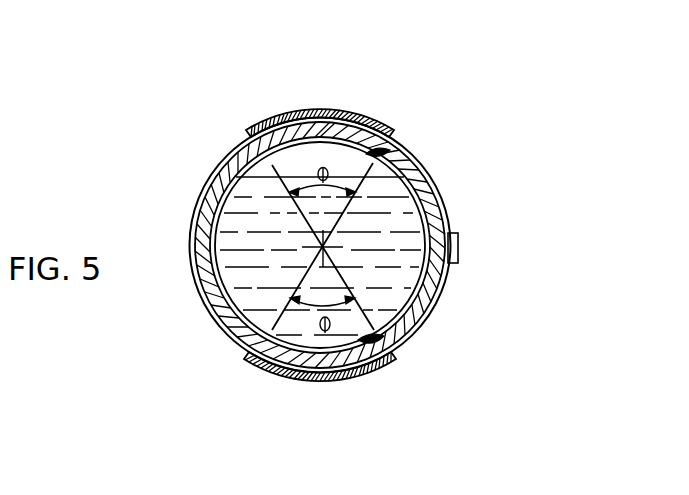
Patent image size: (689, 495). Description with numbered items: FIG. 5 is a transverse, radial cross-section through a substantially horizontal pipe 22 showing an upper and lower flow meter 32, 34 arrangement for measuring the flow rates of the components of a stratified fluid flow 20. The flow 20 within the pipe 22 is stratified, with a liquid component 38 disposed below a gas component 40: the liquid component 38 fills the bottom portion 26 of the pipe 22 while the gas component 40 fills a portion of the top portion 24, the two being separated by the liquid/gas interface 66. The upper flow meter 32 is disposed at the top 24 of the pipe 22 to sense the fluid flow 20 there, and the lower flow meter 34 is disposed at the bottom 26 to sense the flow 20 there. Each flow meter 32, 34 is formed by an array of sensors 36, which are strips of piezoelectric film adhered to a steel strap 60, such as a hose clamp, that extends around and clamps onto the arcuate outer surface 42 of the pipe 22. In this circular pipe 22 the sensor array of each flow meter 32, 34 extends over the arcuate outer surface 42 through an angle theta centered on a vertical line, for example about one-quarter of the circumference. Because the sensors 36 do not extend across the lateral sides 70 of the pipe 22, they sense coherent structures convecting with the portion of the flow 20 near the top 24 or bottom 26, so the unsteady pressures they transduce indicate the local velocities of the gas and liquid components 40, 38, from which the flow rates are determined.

The stratified fluid flow 20 is at (397, 300).
The pipe 22 is at (452, 205).
The top portion 24 is at (372, 153).
The bottom portion 26 is at (374, 338).
The upper flow meter 32 is at (390, 120).
The lower flow meter 34 is at (363, 384).
The sensors 36 is at (352, 112).
The liquid component 38 is at (238, 298).
The gas component 40 is at (263, 168).
The arcuate outer surface 42 is at (200, 212).
The steel strap 60 is at (458, 243).
The interface 66 is at (293, 177).
The lateral sides 70 is at (433, 182).